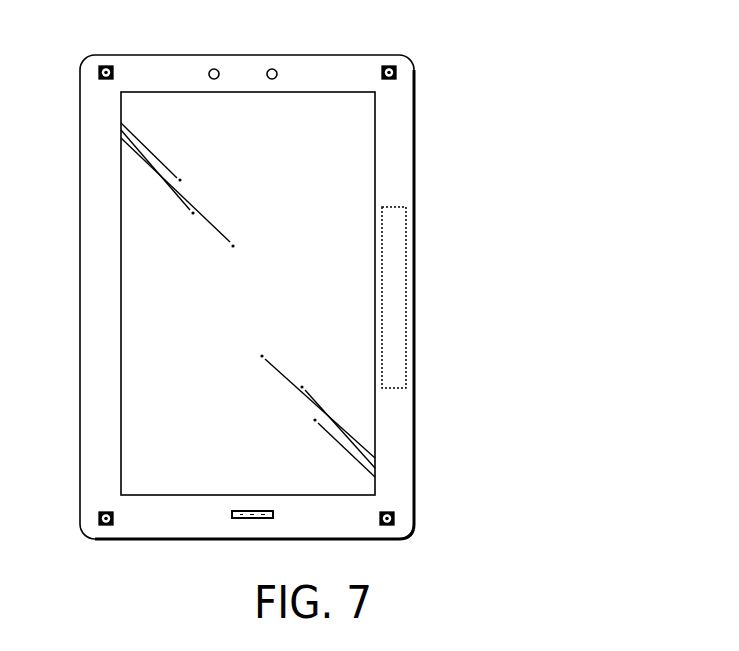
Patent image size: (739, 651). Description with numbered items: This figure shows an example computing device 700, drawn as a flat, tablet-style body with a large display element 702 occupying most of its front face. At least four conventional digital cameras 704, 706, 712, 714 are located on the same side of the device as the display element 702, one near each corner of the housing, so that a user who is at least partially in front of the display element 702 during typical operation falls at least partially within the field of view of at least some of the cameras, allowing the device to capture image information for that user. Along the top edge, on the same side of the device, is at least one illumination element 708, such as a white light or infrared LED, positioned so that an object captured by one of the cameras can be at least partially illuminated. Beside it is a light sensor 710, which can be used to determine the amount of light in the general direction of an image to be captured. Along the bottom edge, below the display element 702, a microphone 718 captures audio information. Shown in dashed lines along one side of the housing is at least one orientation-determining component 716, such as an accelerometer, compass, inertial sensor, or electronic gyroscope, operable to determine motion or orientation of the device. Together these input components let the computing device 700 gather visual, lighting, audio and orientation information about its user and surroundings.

The computing device 700 is at (556, 97).
The display element 702 is at (120, 101).
The digital camera 704 is at (106, 65).
The digital camera 706 is at (392, 65).
The illumination element 708 is at (276, 69).
The light sensor 710 is at (211, 69).
The digital camera 712 is at (106, 526).
The digital camera 714 is at (387, 526).
The orientation-determining component 716 is at (407, 268).
The microphone 718 is at (253, 510).